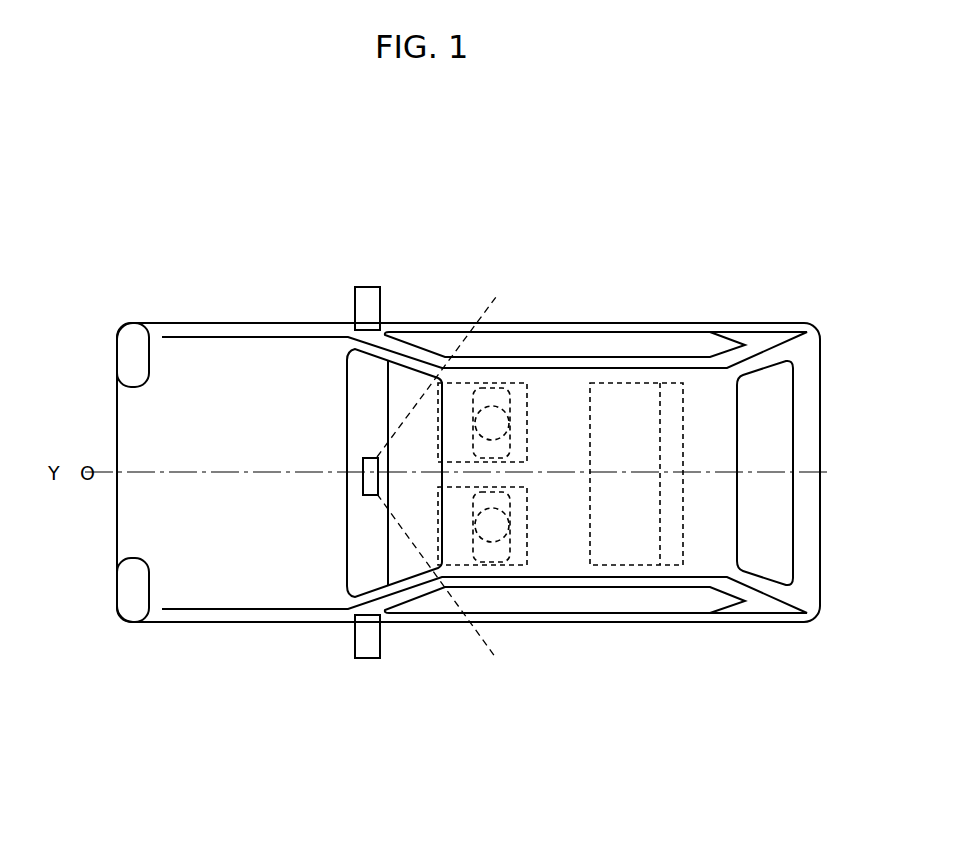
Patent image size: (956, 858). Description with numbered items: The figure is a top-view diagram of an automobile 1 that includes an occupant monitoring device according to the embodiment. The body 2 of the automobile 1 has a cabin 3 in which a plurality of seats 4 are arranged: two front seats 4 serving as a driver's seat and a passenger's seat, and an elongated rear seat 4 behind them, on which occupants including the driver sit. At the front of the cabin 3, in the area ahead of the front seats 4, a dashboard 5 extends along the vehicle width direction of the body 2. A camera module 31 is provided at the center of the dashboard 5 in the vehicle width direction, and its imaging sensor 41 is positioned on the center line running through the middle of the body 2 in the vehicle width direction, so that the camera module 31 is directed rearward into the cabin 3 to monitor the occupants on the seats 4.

The automobile 1 is at (179, 280).
The body 2 is at (262, 318).
The cabin 3 is at (563, 530).
The seat 4 is at (523, 397).
The dashboard 5 is at (372, 558).
The camera module 31 is at (429, 477).
The imaging sensor 41 is at (363, 482).